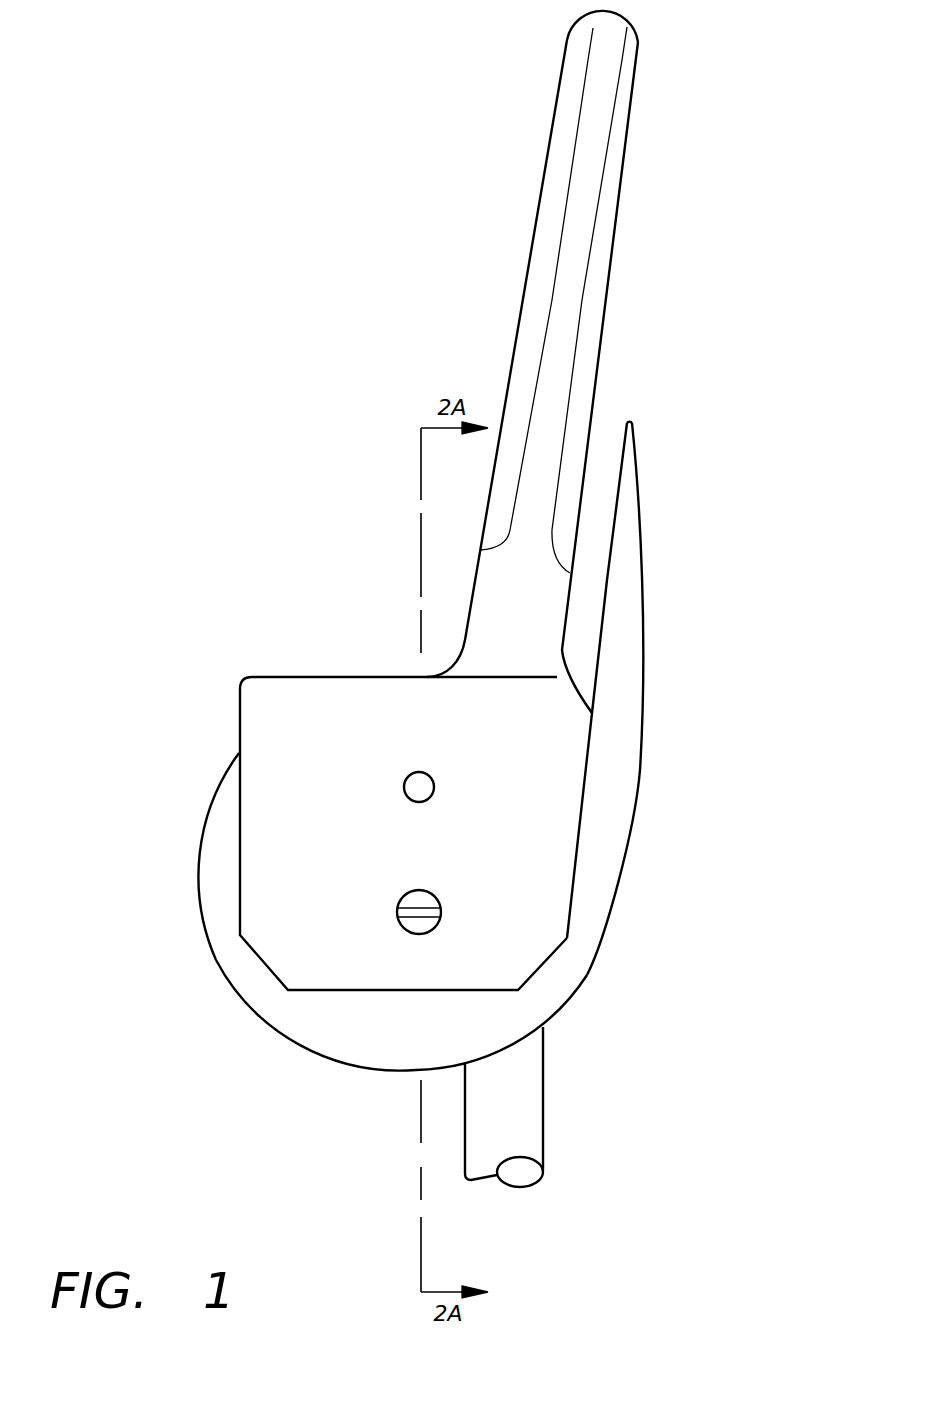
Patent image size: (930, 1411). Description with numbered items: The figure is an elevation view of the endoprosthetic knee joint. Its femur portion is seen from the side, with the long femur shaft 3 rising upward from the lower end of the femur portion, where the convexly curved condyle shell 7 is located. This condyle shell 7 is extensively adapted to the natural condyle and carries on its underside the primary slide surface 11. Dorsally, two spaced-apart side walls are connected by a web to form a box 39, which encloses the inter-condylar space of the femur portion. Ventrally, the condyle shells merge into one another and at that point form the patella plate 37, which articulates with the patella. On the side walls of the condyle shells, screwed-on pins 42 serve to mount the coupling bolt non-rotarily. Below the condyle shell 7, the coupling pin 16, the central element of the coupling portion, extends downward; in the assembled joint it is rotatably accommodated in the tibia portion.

The femur shaft 3 is at (590, 206).
The patella plate 37 is at (632, 522).
The box 39 is at (313, 675).
The pins 42 is at (421, 783).
The primary slide surface 11 is at (225, 837).
The condyle shell 7 is at (385, 1037).
The coupling pin 16 is at (513, 1097).